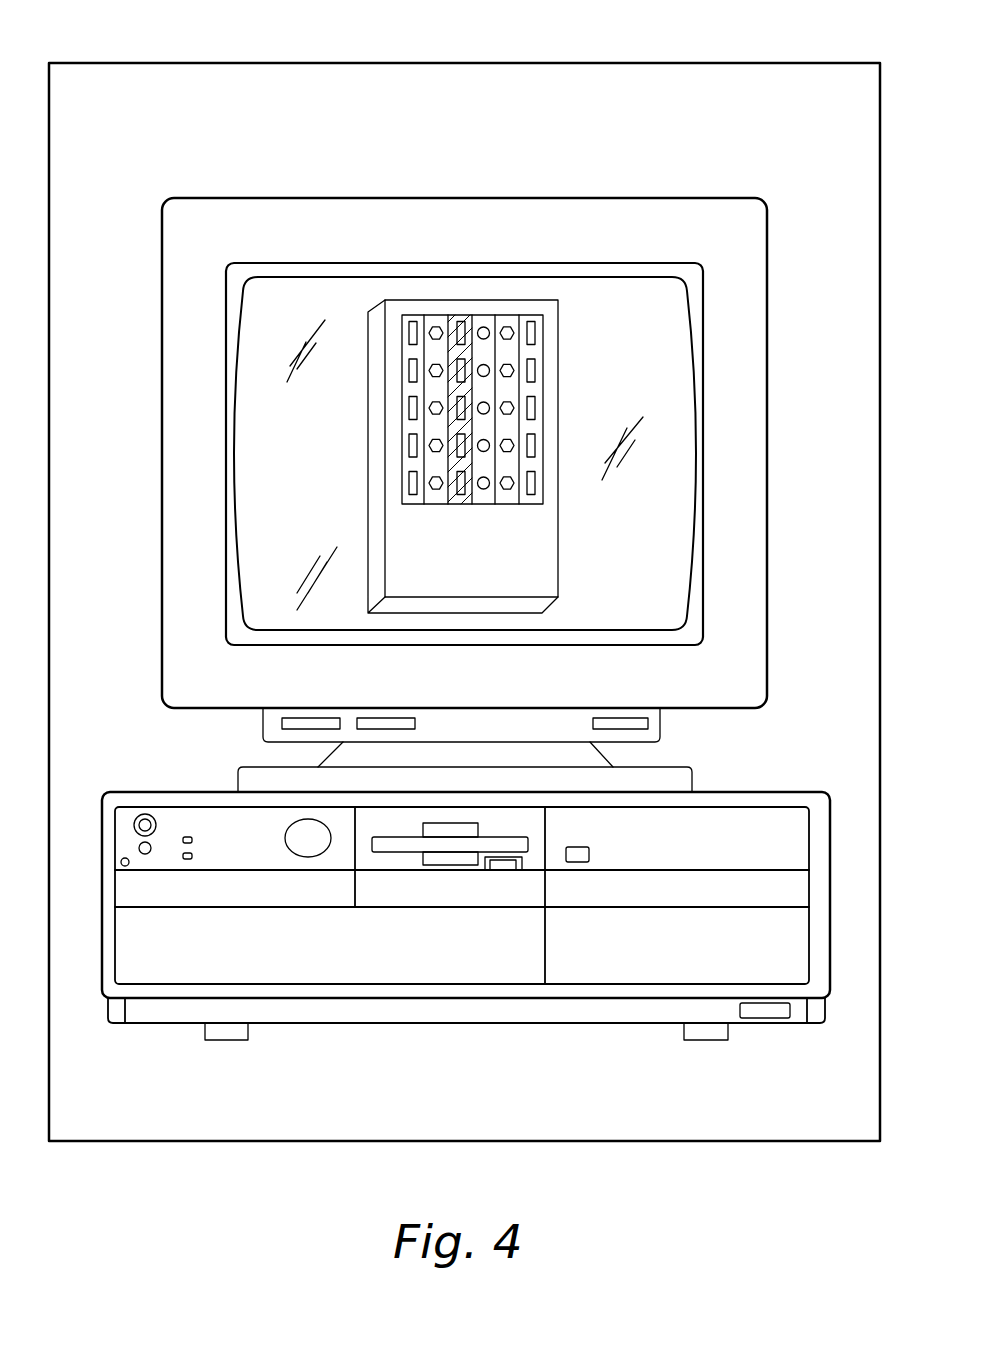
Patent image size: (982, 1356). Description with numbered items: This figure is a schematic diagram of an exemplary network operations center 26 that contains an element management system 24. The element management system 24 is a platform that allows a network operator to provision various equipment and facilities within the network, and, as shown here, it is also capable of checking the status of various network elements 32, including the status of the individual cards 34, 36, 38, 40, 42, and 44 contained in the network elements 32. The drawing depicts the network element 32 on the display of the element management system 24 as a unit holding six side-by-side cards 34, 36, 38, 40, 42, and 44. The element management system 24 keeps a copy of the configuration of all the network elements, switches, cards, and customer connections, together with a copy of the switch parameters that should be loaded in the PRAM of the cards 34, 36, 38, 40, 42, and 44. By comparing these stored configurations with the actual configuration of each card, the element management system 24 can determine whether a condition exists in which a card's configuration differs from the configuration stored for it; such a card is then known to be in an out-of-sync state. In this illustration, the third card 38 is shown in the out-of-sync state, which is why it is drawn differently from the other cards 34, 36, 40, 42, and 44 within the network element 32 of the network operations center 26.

The element management system 24 is at (768, 372).
The network operations center 26 is at (748, 63).
The network element 32 is at (558, 402).
The card 34 is at (413, 504).
The card 36 is at (435, 316).
The third card 38 is at (462, 504).
The card 40 is at (483, 316).
The card 42 is at (508, 504).
The card 44 is at (532, 312).